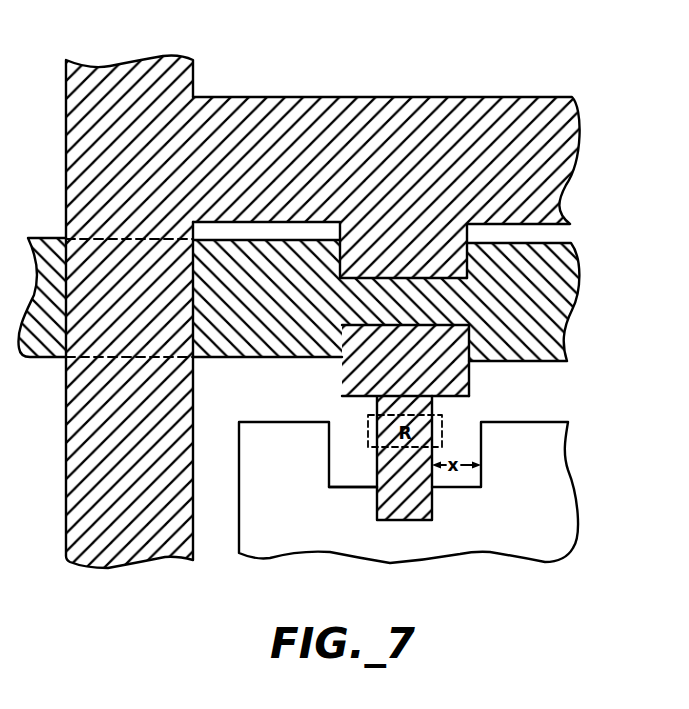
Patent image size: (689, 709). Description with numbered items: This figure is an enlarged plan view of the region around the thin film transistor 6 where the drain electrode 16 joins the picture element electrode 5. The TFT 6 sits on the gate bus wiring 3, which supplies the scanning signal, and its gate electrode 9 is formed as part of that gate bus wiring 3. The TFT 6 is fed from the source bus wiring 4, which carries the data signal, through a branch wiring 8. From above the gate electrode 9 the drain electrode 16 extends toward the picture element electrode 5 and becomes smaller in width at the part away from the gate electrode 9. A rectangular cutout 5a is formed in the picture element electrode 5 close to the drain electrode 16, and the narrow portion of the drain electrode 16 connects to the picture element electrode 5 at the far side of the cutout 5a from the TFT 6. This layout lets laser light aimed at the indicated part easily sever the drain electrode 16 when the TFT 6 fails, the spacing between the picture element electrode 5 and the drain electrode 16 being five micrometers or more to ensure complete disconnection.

The gate bus wiring 3 is at (577, 262).
The source bus wiring 4 is at (194, 400).
The picture element electrode 5 is at (543, 433).
The rectangular cutout 5a is at (348, 478).
The thin film transistor (TFT) 6 is at (417, 321).
The branch wiring 8 is at (576, 131).
The gate electrode 9 is at (366, 299).
The drain electrode 16 is at (470, 385).